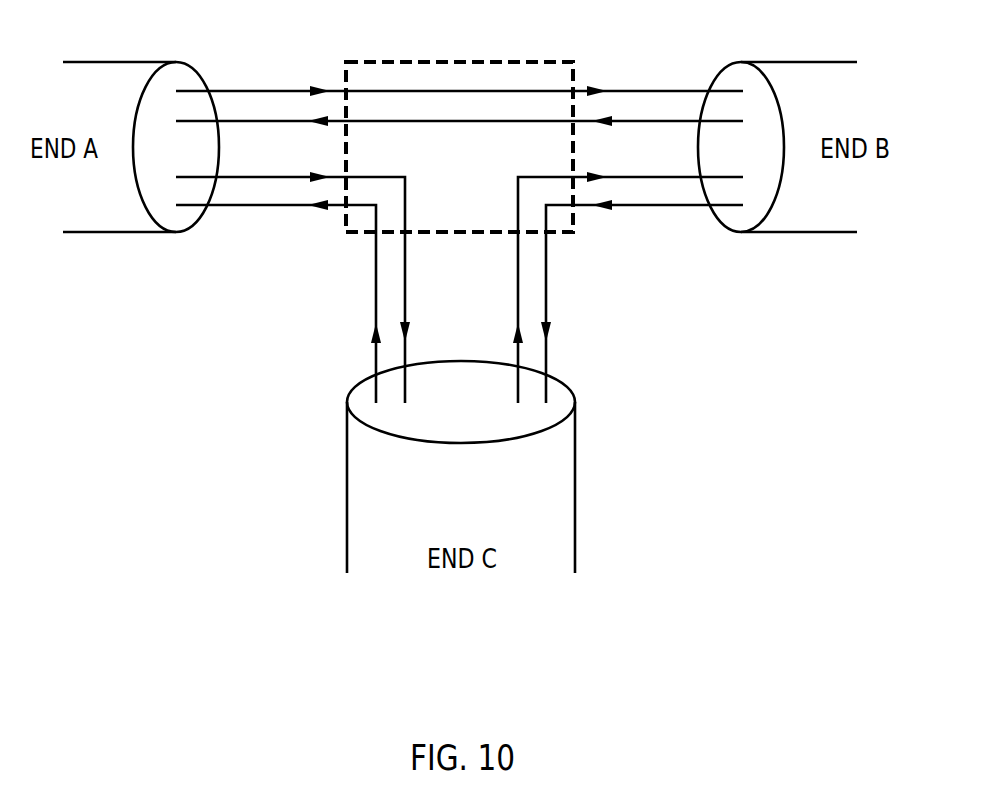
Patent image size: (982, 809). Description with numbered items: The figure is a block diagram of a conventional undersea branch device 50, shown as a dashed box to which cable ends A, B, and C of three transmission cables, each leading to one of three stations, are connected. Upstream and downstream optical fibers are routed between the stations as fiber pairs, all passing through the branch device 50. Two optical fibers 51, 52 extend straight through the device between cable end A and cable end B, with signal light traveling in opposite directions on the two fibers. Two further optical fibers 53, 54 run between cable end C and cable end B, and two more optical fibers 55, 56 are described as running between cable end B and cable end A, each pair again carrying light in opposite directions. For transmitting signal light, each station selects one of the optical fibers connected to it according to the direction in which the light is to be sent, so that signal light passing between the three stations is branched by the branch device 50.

The undersea branch device 50 is at (475, 62).
The optical fiber 51 is at (253, 90).
The optical fiber 52 is at (283, 120).
The optical fiber 53 is at (638, 207).
The optical fiber 54 is at (673, 178).
The optical fiber 55 is at (375, 295).
The optical fiber 56 is at (405, 307).